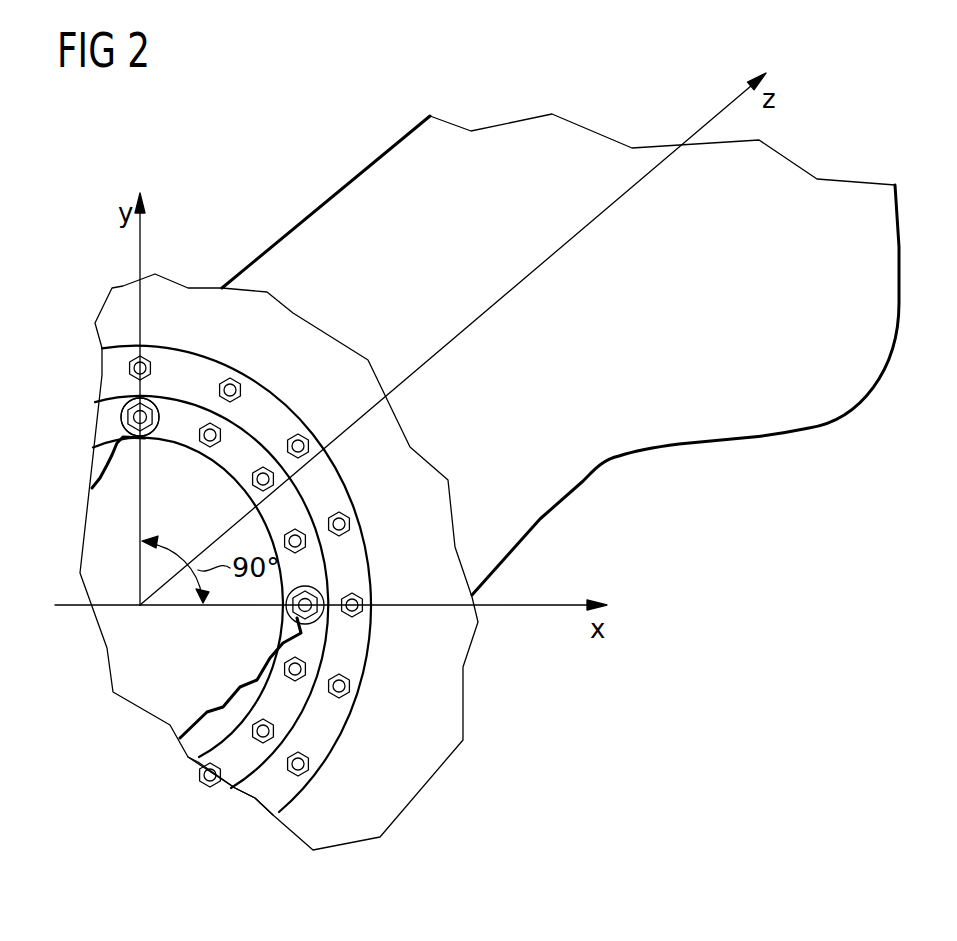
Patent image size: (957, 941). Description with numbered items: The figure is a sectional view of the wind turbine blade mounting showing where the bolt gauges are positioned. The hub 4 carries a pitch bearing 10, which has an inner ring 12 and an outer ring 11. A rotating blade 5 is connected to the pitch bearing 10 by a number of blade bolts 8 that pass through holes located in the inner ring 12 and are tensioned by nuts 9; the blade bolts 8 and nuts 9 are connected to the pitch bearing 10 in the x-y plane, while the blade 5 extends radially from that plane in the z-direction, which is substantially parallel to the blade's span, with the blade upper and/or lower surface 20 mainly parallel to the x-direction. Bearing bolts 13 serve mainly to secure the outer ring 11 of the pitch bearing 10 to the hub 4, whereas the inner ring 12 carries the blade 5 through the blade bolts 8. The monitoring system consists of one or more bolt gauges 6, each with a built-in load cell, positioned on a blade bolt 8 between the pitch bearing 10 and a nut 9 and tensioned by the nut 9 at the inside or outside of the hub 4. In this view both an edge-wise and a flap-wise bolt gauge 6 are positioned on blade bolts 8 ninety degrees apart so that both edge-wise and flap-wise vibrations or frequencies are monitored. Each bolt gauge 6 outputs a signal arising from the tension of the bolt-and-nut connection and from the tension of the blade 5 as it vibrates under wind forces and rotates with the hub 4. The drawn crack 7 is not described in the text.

The hub 4 is at (455, 710).
The blade 5 is at (755, 430).
The blade upper and/or lower surface 20 is at (360, 182).
The pitch bearing 10 is at (302, 806).
The outer ring 11 is at (270, 800).
The nut 9 is at (214, 450).
The bearing bolt 13 is at (122, 370).
The inner ring 12 is at (203, 782).
The bolt gauge 6 is at (121, 418).
The blade bolt 8 is at (157, 430).
The crack 7 is at (112, 467).